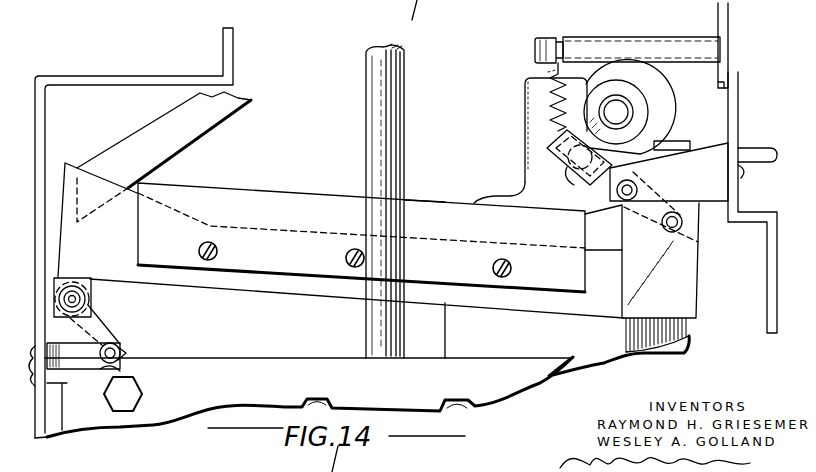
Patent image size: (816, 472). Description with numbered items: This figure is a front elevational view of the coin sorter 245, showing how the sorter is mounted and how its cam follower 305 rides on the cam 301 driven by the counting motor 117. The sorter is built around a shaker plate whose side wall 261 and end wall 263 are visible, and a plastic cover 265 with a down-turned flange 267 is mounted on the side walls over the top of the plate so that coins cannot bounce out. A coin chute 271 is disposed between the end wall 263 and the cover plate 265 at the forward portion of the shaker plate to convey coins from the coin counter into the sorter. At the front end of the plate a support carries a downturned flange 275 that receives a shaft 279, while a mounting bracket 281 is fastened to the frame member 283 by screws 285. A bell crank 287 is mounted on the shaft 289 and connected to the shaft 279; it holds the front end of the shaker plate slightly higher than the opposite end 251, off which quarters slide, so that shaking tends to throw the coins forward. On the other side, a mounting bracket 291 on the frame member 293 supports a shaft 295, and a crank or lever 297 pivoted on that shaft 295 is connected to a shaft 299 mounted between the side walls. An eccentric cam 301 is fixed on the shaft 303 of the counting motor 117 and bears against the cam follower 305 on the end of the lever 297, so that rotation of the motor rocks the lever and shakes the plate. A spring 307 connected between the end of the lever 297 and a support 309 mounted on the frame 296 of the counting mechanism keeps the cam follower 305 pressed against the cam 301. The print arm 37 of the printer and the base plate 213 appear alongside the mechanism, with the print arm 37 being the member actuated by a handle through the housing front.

The print arm 37 is at (397, 92).
The counting motor 117 is at (667, 107).
The base plate 213 is at (148, 418).
The coin sorter 245 is at (424, 201).
The end of the shaker plate 251 is at (698, 320).
The side wall 261 is at (80, 255).
The end wall 263 is at (60, 172).
The plastic cover 265 is at (290, 193).
The down-turned flange 267 is at (228, 203).
The coin chute 271 is at (150, 133).
The downturned flange 275 is at (80, 280).
The shaft 279 is at (88, 301).
The mounting bracket 281 is at (104, 369).
The frame member 283 is at (40, 437).
The screws 285 is at (45, 387).
The bell crank 287 is at (100, 326).
The shaft 289 is at (120, 352).
The mounting bracket 291 is at (720, 158).
The frame member 293 is at (741, 199).
The shaft 295 is at (608, 206).
The frame 296 is at (730, 38).
The crank or lever 297 is at (553, 148).
The shaft 299 is at (681, 228).
The eccentric cam 301 is at (632, 130).
The shaft 303 is at (621, 111).
The cam follower 305 is at (562, 176).
The spring 307 is at (550, 98).
The support 309 is at (608, 36).